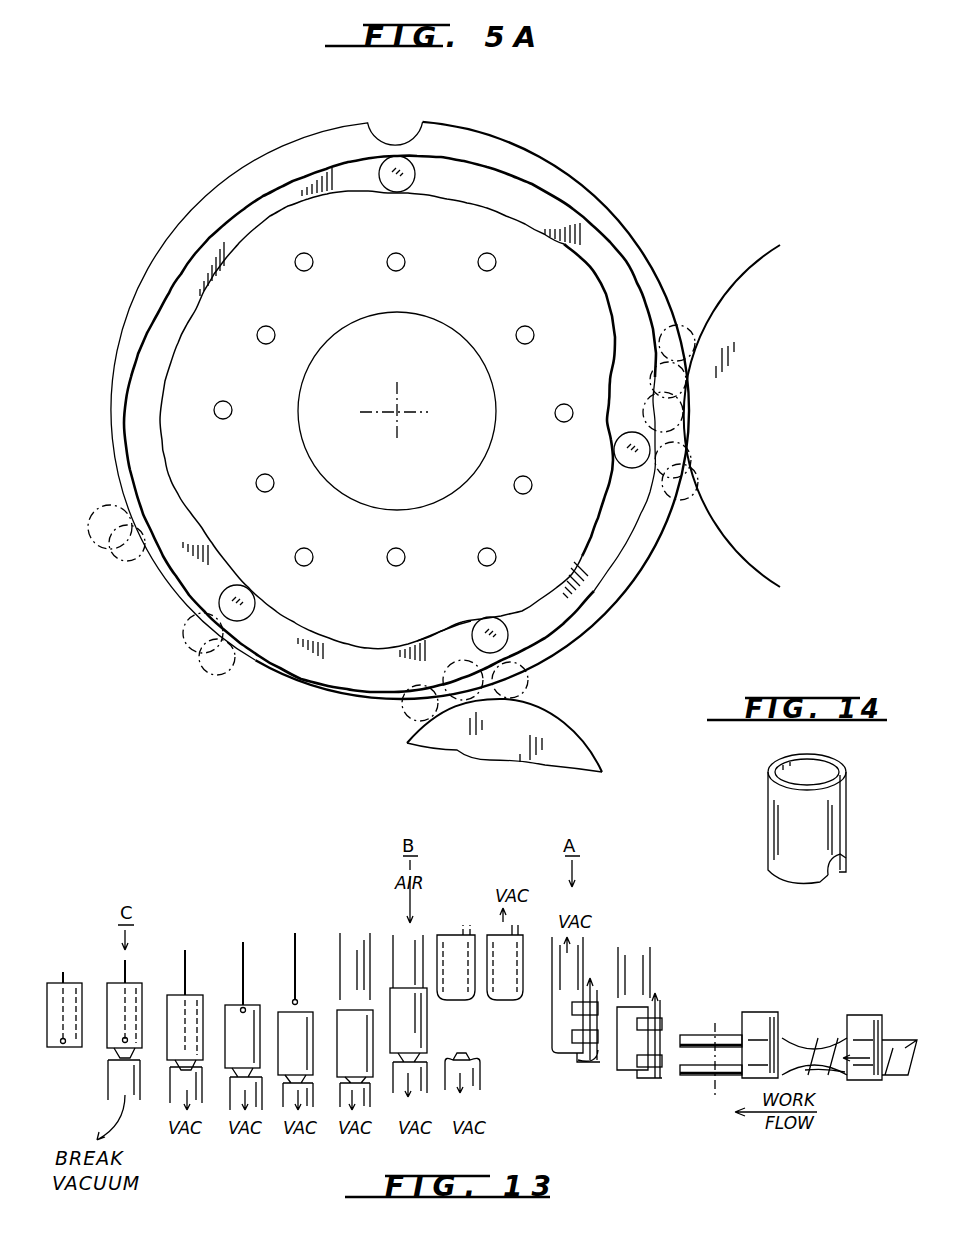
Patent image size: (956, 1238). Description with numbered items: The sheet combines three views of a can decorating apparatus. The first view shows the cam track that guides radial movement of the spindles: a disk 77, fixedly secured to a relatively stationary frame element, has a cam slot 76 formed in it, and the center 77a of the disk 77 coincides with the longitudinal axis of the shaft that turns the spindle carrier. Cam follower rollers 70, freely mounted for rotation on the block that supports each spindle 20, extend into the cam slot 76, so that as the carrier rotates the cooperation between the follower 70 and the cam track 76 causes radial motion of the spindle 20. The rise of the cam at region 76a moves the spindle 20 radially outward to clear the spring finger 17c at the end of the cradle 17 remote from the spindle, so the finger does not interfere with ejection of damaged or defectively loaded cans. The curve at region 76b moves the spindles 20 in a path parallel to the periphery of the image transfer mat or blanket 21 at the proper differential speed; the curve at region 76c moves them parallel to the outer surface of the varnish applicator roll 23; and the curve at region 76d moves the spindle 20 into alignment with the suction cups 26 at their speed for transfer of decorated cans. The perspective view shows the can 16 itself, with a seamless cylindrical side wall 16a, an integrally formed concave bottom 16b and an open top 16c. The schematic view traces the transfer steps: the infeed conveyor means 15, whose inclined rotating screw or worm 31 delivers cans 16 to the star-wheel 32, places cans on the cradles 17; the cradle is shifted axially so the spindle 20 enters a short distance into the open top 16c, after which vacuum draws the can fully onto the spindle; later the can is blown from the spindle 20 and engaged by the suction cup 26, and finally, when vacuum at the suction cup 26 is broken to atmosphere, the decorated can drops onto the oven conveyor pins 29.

In FIG. 5A, the disk 77 is at (186, 203).
In FIG. 5A, the center of disk 77a is at (398, 412).
In FIG. 5A, the cam slot 76 is at (270, 182).
In FIG. 5A, the rise region of cam 76a is at (567, 225).
In FIG. 5A, the curve region of cam 76b is at (622, 378).
In FIG. 5A, the curve region of cam slot 76c is at (440, 643).
In FIG. 5A, the curve region of cam slot 76d is at (200, 547).
In FIG. 5A, the cam follower rollers 70 is at (417, 177).
In FIG. 5A, the image transfer mat 21 is at (740, 267).
In FIG. 5A, the applicator roll 23 is at (570, 724).
In FIG. 14, the can 16 is at (813, 824).
In FIG. 13, the can 16 is at (105, 1040).
In FIG. 14, the cylindrical side wall 16a is at (768, 827).
In FIG. 14, the concave bottom 16b is at (832, 876).
In FIG. 14, the open top 16c is at (827, 768).
In FIG. 13, the oven conveyor pins 29 is at (122, 970).
In FIG. 13, the spindle 20 is at (342, 960).
In FIG. 13, the suction cup 26 is at (462, 1055).
In FIG. 13, the cradle 17 is at (600, 1050).
In FIG. 13, the spring finger 17c is at (577, 1062).
In FIG. 13, the star-wheel 32 is at (690, 1035).
In FIG. 13, the infeed conveyor means 15 is at (806, 1023).
In FIG. 13, the rotating screw 31 is at (815, 1075).